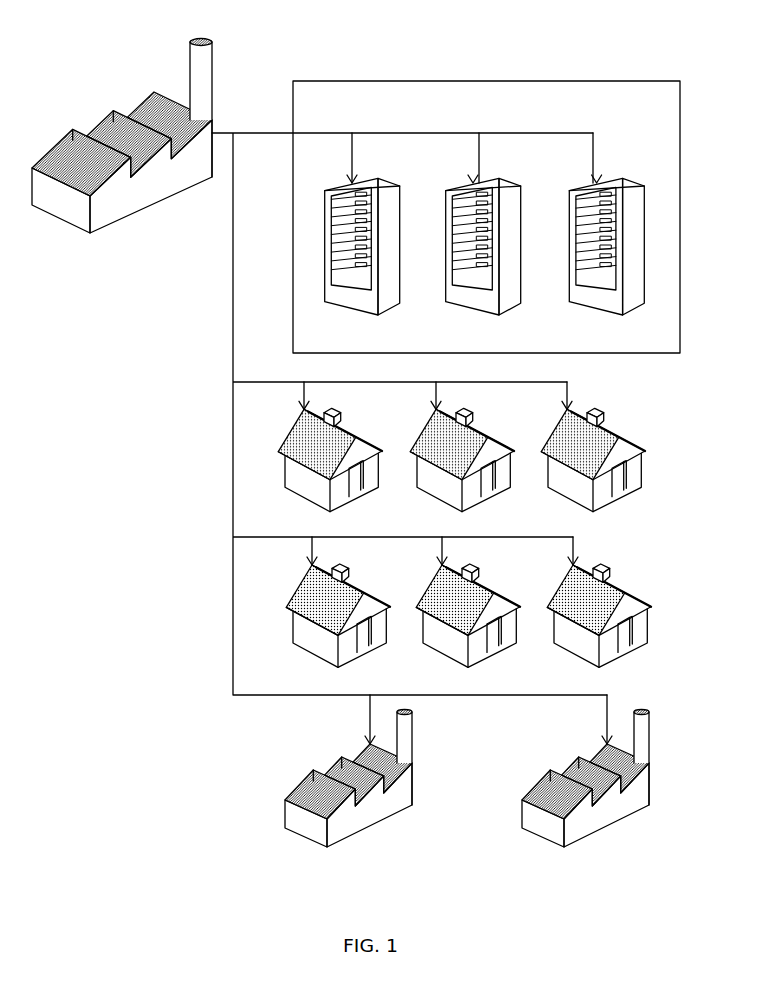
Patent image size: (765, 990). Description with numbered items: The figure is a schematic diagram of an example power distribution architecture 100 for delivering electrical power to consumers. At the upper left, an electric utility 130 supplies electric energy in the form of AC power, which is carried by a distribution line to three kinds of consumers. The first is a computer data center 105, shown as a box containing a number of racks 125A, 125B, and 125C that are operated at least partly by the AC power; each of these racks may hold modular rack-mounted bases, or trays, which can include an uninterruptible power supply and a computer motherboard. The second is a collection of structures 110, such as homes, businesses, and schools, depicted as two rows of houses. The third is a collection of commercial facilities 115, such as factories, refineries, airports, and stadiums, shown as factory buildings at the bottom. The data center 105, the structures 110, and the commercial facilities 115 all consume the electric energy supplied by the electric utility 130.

The power distribution architecture 100 is at (600, 52).
The computer data center 105 is at (627, 81).
The structures 110 is at (299, 493).
The commercial facilities 115 is at (298, 785).
The rack 125A is at (393, 206).
The rack 125B is at (513, 221).
The rack 125C is at (632, 298).
The electric utility 130 is at (163, 196).